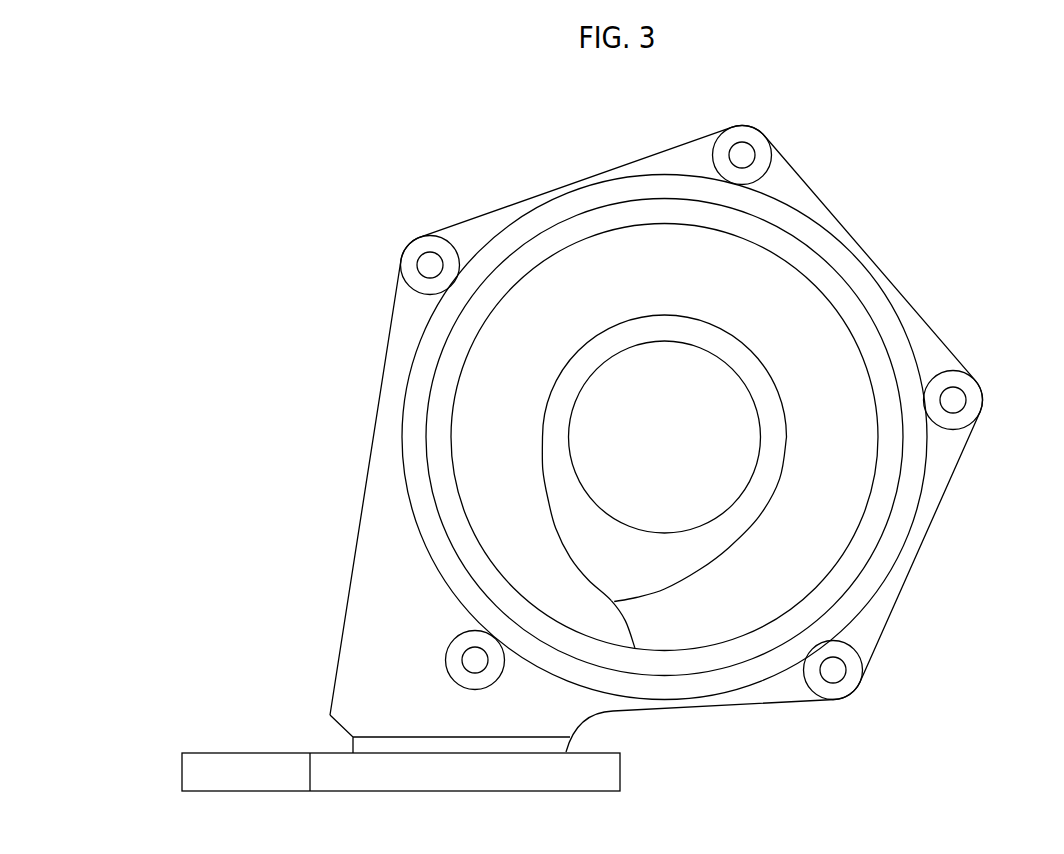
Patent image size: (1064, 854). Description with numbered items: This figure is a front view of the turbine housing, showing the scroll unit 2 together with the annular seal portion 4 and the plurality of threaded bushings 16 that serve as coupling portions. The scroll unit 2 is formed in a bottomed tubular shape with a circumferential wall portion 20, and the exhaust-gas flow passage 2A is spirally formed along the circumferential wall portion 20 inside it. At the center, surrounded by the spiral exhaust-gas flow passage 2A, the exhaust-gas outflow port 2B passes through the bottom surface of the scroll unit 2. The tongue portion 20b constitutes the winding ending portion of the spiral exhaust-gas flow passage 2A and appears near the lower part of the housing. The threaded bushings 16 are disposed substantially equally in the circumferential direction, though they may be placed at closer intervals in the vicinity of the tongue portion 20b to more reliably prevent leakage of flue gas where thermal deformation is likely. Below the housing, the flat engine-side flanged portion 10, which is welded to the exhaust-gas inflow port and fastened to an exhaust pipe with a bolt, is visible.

The scroll unit 2 is at (800, 355).
The exhaust-gas flow passage 2A is at (664, 437).
The exhaust-gas outflow port 2B is at (665, 437).
The annular seal portion 4 is at (812, 233).
The engine-side flanged portion 10 is at (270, 752).
The threaded bushings 16 is at (745, 142).
The circumferential wall portion 20 is at (596, 219).
The tongue portion 20b is at (655, 622).